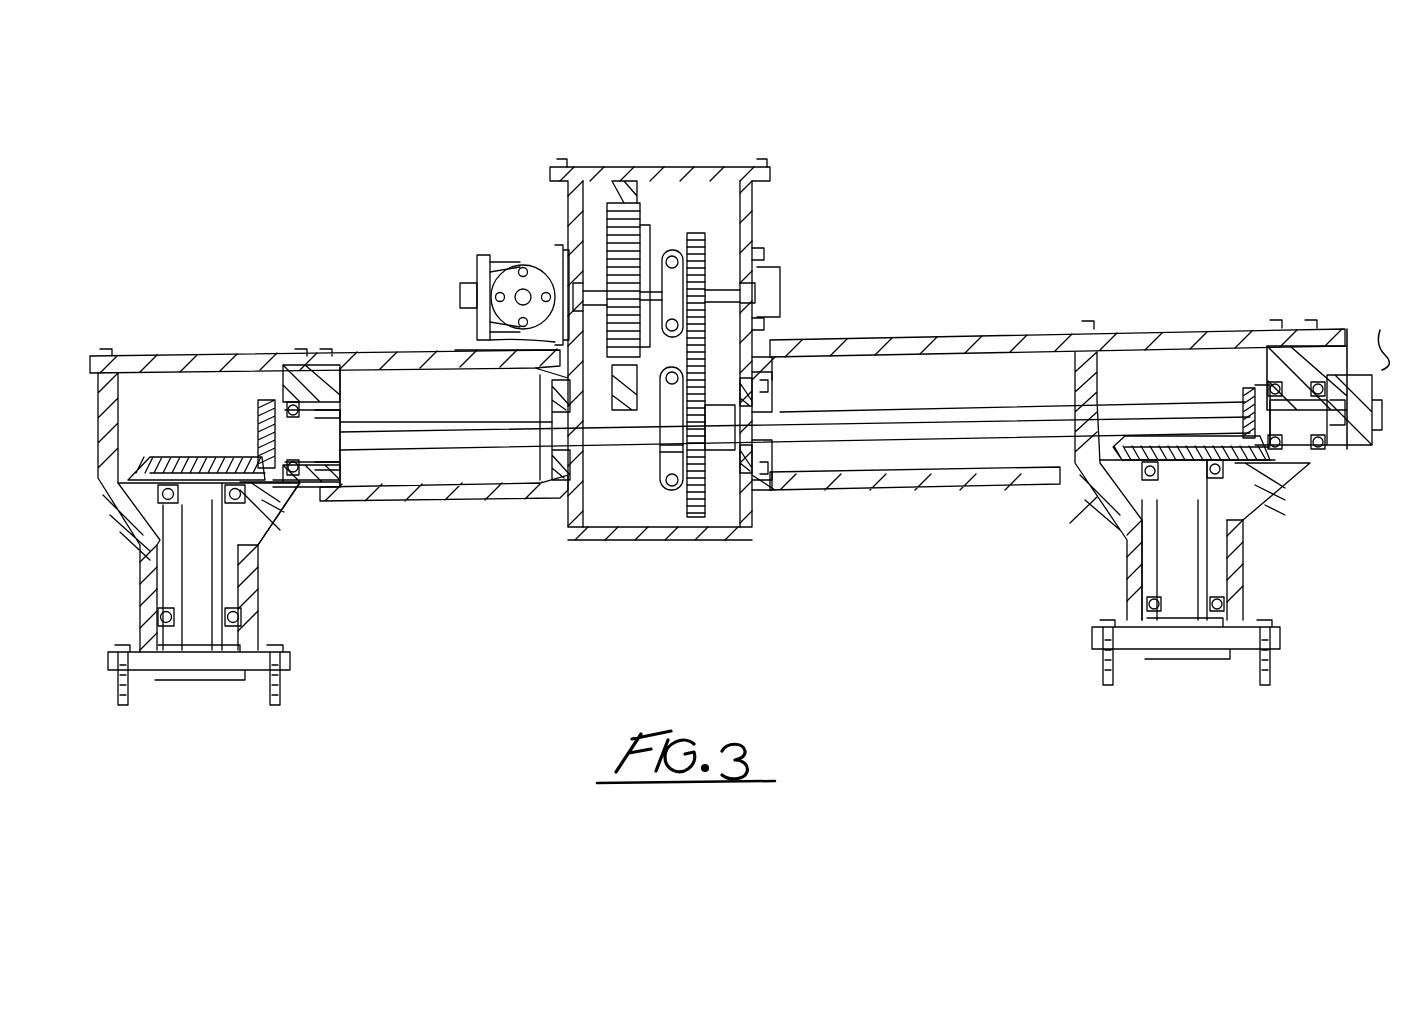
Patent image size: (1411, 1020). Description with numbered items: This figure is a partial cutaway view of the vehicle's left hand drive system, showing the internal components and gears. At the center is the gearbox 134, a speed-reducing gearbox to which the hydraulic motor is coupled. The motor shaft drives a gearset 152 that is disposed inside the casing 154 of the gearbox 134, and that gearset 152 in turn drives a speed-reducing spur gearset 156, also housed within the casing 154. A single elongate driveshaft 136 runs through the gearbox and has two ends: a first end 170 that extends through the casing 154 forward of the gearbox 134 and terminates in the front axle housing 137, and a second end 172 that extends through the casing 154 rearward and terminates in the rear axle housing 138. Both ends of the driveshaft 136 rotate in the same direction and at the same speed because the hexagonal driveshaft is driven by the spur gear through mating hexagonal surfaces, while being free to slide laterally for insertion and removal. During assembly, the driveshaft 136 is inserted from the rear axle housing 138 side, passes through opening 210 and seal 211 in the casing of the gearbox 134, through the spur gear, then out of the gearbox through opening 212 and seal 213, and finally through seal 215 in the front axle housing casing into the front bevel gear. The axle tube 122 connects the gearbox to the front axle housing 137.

The gearbox 134 is at (518, 137).
The gearset 152 is at (668, 200).
The speed-reducing spur gearset 156 is at (700, 218).
The casing 154 is at (752, 208).
The left axle tube 122 is at (397, 350).
The first end 170 is at (365, 420).
The seal 213 is at (558, 414).
The seal 211 is at (772, 404).
The driveshaft 136 is at (775, 420).
The seal 215 is at (344, 456).
The opening 212 is at (588, 455).
The opening 210 is at (776, 455).
The front axle housing 137 is at (288, 488).
The rear axle housing 138 is at (1090, 498).
The second end 172 is at (1225, 402).